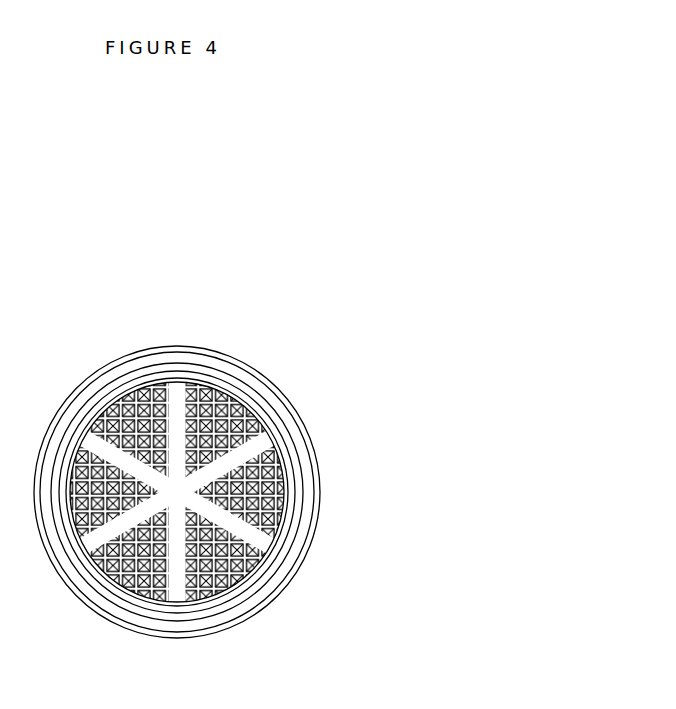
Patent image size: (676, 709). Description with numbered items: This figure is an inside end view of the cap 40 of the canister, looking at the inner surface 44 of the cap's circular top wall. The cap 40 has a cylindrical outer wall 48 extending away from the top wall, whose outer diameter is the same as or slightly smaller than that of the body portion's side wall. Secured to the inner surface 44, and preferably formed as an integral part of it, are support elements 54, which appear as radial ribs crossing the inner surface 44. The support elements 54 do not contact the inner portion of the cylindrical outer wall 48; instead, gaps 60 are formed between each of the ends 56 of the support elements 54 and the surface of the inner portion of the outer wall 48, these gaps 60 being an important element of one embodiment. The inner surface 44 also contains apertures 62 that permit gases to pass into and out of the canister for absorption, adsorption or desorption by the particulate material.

The cap 40 is at (425, 414).
The inner surface 44 is at (226, 421).
The cylindrical outer wall 48 is at (318, 492).
The support element 54 is at (277, 535).
The ends 56 is at (177, 383).
The gaps 60 is at (275, 552).
The apertures 62 is at (125, 390).